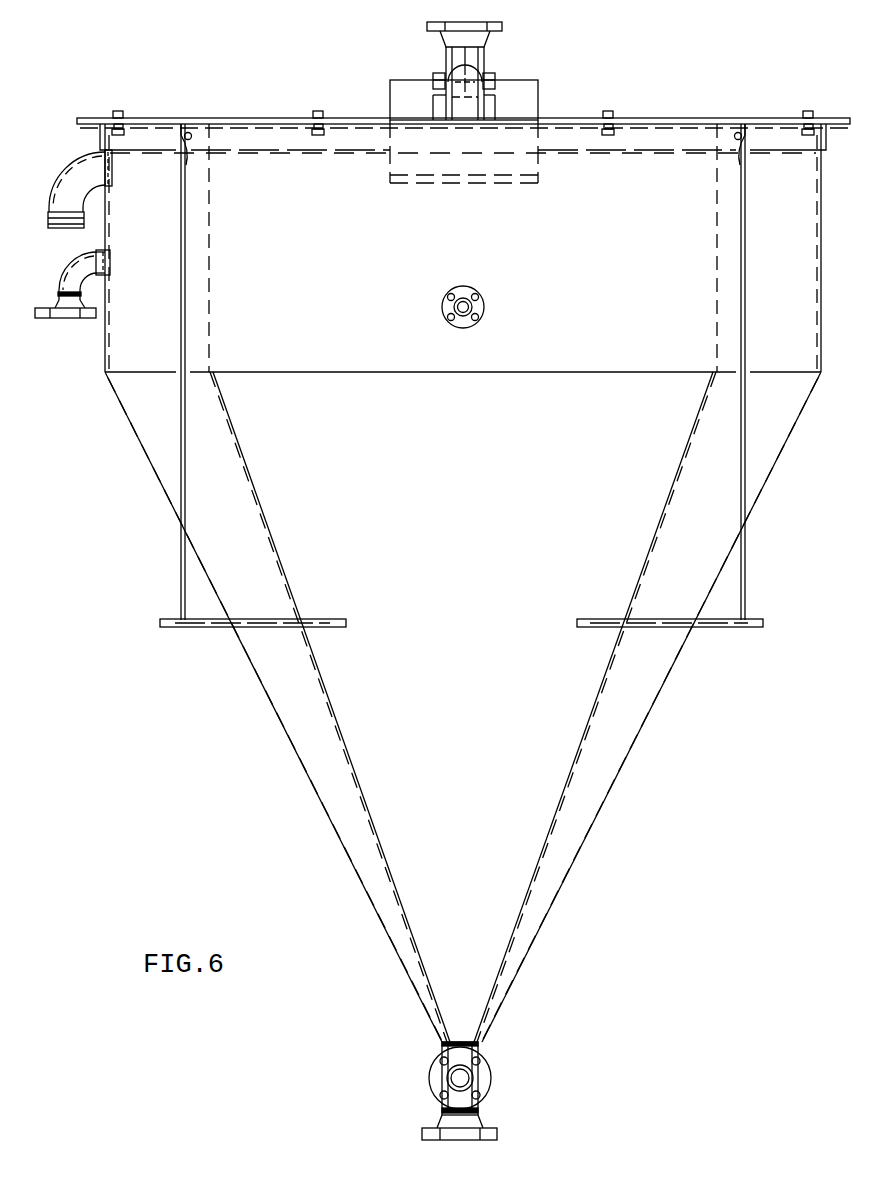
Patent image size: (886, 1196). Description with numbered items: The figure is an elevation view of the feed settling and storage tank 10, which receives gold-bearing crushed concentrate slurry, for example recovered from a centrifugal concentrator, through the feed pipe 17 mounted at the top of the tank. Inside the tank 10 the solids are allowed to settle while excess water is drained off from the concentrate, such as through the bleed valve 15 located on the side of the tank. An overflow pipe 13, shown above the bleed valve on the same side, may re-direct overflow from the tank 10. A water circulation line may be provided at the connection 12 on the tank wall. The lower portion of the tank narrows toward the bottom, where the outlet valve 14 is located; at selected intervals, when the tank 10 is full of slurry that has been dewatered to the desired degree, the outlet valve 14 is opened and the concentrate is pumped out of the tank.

The feed settling and storage tank 10 is at (298, 774).
The water circulation line 12 is at (440, 306).
The overflow pipe 13 is at (68, 164).
The outlet valve 14 is at (497, 1077).
The bleed valve 15 is at (60, 322).
The feed pipe 17 is at (442, 53).